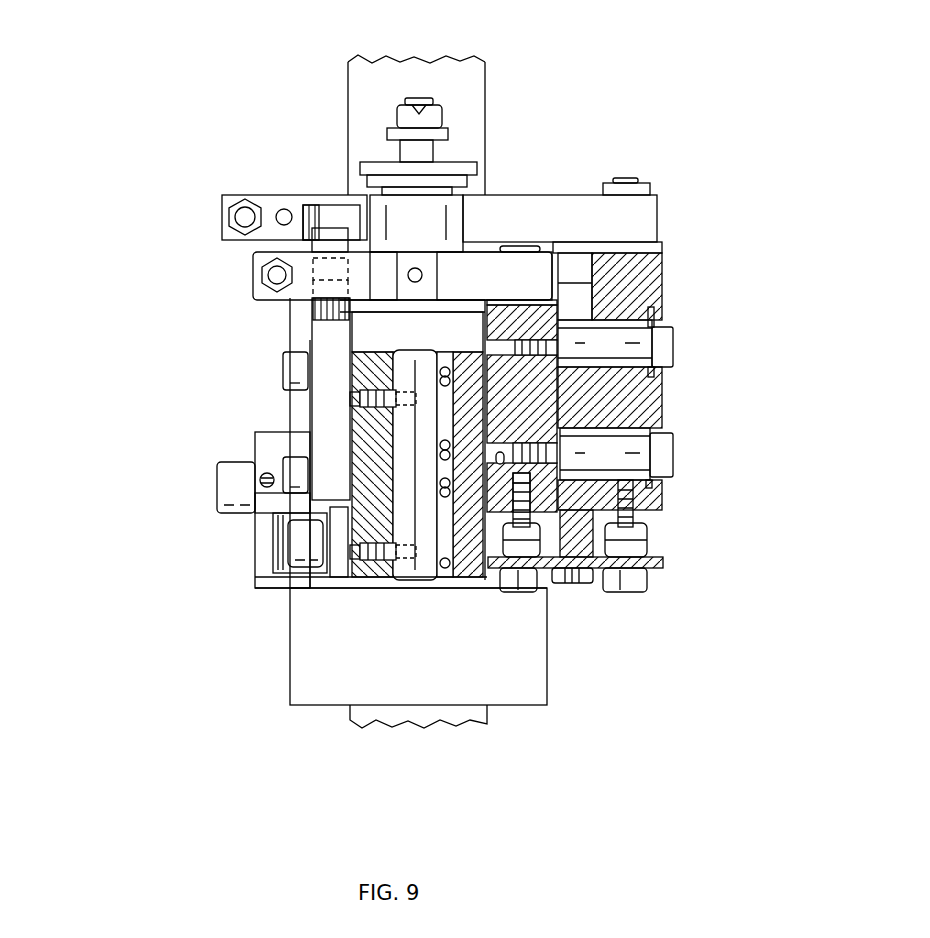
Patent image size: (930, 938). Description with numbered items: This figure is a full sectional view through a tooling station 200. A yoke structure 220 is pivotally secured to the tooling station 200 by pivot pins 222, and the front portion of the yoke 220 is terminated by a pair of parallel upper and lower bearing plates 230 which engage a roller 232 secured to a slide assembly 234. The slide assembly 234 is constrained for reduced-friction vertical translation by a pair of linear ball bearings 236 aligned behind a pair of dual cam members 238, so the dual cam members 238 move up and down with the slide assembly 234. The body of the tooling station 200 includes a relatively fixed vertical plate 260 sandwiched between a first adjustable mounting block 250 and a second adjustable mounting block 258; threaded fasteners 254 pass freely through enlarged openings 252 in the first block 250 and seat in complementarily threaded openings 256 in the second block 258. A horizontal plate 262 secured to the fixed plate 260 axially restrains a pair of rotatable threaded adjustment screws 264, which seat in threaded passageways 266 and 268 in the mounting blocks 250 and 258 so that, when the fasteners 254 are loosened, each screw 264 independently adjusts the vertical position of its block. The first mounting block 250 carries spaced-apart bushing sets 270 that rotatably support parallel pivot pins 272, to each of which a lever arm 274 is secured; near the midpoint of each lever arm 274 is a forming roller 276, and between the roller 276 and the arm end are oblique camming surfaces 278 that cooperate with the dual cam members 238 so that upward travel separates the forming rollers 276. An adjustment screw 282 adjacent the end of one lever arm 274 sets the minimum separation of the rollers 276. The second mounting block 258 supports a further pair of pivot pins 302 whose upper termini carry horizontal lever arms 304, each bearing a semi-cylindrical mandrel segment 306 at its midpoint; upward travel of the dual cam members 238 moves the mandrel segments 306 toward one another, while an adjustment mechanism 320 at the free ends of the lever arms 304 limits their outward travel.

The tooling station 200 is at (520, 692).
The yoke structure 220 is at (265, 447).
The pivot pins 222 is at (217, 480).
The bearing plates 230 is at (263, 577).
The roller 232 is at (300, 538).
The slide assembly 234 is at (313, 617).
The linear ball bearings 236 is at (412, 567).
The dual cam members 238 is at (320, 327).
The first adjustable mounting block 250 is at (645, 277).
The enlarged openings 252 is at (653, 318).
The threaded fasteners 254 is at (673, 452).
The threaded openings 256 is at (518, 300).
The second adjustable mounting block 258 is at (543, 487).
The fixed plate 260 is at (573, 567).
The horizontal plate 262 is at (662, 567).
The threaded adjustment screws 264 is at (628, 590).
The threaded passageway 266 is at (632, 495).
The threaded passageway 268 is at (523, 477).
The bushing sets 270 is at (662, 245).
The pivot pins 272 is at (640, 183).
The lever arms 274 is at (500, 213).
The forming rollers 276 is at (466, 165).
The oblique camming surfaces 278 is at (317, 215).
The adjustment screw 282 is at (228, 213).
The pivot pins 302 is at (520, 246).
The lever arms 304 is at (487, 283).
The mandrel segments 306 is at (432, 232).
The adjustment mechanism 320 is at (188, 241).